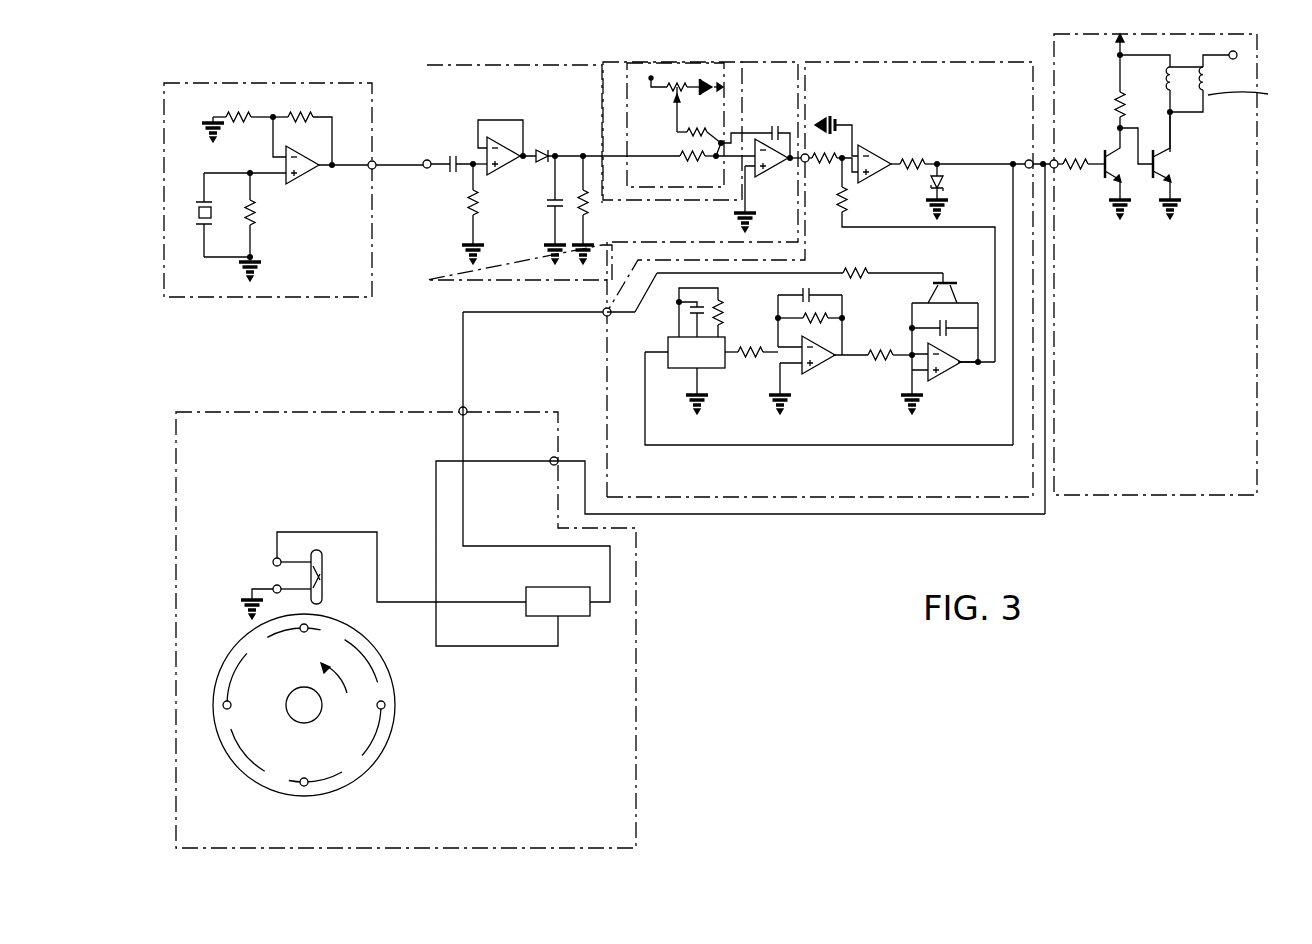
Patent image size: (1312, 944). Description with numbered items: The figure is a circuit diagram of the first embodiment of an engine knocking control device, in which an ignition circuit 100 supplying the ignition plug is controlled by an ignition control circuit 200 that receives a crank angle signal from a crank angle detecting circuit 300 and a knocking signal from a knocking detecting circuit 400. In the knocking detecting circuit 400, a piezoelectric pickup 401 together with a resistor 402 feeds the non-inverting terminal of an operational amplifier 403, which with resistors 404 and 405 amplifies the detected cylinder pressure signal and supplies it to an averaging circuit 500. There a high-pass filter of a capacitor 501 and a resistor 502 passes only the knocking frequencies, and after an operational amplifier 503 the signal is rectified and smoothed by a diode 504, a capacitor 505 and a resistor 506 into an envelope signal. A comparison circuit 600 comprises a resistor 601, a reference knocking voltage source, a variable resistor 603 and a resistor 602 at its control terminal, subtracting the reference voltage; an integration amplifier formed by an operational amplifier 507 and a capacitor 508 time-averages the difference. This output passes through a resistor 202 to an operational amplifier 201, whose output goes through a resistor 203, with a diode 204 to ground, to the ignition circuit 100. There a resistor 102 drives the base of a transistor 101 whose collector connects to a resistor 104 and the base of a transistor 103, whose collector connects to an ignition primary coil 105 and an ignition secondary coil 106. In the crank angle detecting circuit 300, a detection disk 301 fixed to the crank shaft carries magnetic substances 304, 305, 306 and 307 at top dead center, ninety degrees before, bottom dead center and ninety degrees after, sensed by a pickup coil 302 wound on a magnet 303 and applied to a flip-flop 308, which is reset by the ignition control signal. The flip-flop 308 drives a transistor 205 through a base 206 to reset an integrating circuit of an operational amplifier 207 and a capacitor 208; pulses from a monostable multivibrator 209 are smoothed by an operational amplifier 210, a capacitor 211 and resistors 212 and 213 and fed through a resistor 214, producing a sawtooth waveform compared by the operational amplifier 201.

The ignition circuit 100 is at (1257, 216).
The transistor 101 is at (1100, 172).
The resistor 102 is at (1085, 152).
The transistor 103 is at (1171, 163).
The resistor 104 is at (1118, 100).
The ignition primary coil 105 is at (1237, 56).
The ignition secondary coil 106 is at (1260, 92).
The ignition control circuit 200 is at (607, 316).
The operational amplifier 201 is at (873, 147).
The resistor 202 is at (823, 165).
The resistor 203 is at (918, 161).
The diode 204 is at (944, 182).
The transistor 205 is at (952, 282).
The base resistor 206 is at (866, 271).
The operational amplifier 207 is at (946, 381).
The capacitor 208 is at (948, 322).
The monostable multivibrator circuit 209 is at (706, 369).
The operational amplifier 210 is at (820, 362).
The capacitor 211 is at (803, 292).
The resistor 212 is at (820, 318).
The resistor 213 is at (722, 305).
The resistor 214 is at (882, 354).
The crank angle detecting circuit 300 is at (638, 652).
The detection disk 301 is at (218, 680).
The pickup coil 302 is at (323, 581).
The magnet 303 is at (317, 549).
The magnetic substance 304 is at (303, 632).
The magnetic substance 305 is at (231, 702).
The magnetic substance 306 is at (308, 784).
The magnetic substance 307 is at (385, 703).
The flip-flop 308 is at (576, 618).
The knocking detecting circuit 400 is at (282, 84).
The piezoelectric pickup 401 is at (198, 224).
The resistor 402 is at (257, 213).
The operational amplifier 403 is at (306, 178).
The resistor 404 is at (243, 123).
The resistor 405 is at (309, 115).
The averaging circuit 500 is at (508, 73).
The capacitor 501 is at (452, 155).
The resistor 502 is at (466, 208).
The operational amplifier 503 is at (509, 167).
The diode 504 is at (543, 150).
The capacitor 505 is at (548, 204).
The resistor 506 is at (588, 205).
The operational amplifier 507 is at (768, 176).
The capacitor 508 is at (775, 128).
The comparison circuit 600 is at (643, 67).
The resistor 601 is at (686, 158).
The resistor 602 is at (686, 136).
The variable resistor 603 is at (682, 85).